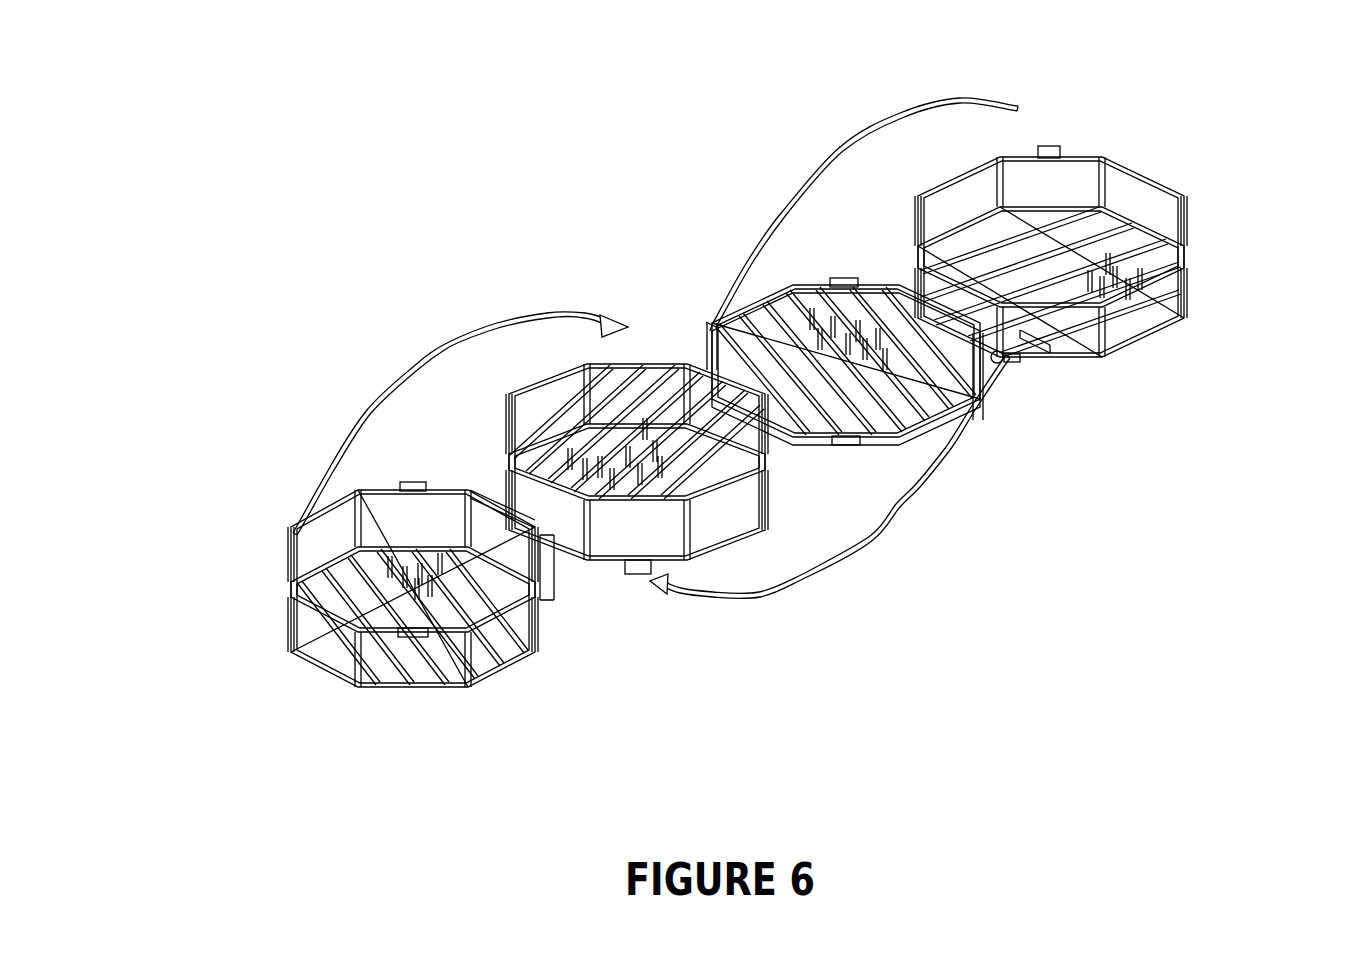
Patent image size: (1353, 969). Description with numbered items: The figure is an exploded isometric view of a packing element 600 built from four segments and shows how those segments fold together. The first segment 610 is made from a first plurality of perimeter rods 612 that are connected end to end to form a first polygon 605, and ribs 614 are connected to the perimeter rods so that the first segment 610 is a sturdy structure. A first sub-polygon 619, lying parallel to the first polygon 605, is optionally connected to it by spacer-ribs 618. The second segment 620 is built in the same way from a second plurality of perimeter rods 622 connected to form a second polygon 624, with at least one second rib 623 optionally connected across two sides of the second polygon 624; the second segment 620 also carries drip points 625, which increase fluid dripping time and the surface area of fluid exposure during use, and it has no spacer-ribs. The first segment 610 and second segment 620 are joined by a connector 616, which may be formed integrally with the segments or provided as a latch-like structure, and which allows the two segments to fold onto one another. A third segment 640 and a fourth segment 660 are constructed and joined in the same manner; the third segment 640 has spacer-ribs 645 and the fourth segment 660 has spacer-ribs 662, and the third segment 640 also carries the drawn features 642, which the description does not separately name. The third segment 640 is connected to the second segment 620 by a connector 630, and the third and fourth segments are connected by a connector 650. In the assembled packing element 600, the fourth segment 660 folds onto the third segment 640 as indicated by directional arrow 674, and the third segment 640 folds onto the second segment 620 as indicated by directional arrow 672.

The packing element 600 is at (746, 343).
The first polygon 605 is at (977, 239).
The first segment 610 is at (937, 212).
The first plurality of perimeter rods 612 is at (978, 223).
The ribs 614 is at (1096, 366).
The connector 616 is at (1060, 388).
The spacer-ribs 618 is at (1237, 301).
The first sub-polygon 619 is at (862, 165).
The second segment 620 is at (861, 366).
The second plurality of perimeter rods 622 is at (835, 440).
The second rib 623 is at (926, 370).
The second polygon 624 is at (902, 401).
The drip points 625 is at (758, 268).
The connector 630 is at (860, 433).
The third segment 640 is at (658, 508).
The pins 642 is at (684, 535).
The spacer-ribs 645 is at (513, 427).
The connector 650 is at (562, 562).
The fourth segment 660 is at (364, 535).
The spacer-ribs 662 is at (358, 522).
The directional arrow 672 is at (830, 477).
The directional arrow 674 is at (460, 404).